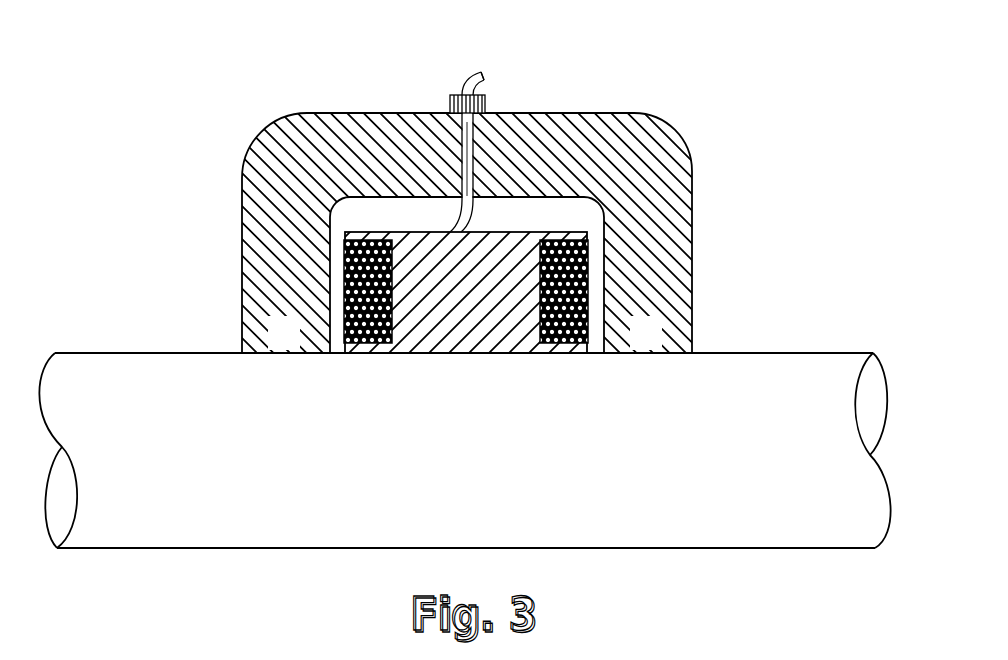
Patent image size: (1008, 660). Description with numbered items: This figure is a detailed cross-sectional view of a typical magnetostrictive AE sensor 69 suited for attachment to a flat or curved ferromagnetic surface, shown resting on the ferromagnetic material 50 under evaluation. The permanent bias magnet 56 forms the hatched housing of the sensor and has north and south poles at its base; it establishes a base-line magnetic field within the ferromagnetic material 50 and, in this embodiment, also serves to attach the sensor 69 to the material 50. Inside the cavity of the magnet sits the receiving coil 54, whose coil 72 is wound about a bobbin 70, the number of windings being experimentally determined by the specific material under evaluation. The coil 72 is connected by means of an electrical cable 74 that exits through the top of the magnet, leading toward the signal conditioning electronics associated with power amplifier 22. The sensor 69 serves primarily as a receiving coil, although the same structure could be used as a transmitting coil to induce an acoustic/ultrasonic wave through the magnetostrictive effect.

The power amplifier 22 is at (489, 74).
The ferromagnetic material 50 is at (453, 463).
The receiving coil 54 is at (410, 355).
The permanent bias magnet 56 is at (250, 203).
The magnetostrictive AE sensor 69 is at (478, 230).
The bobbin 70 is at (480, 348).
The coil 72 is at (343, 287).
The electrical cable 74 is at (462, 78).